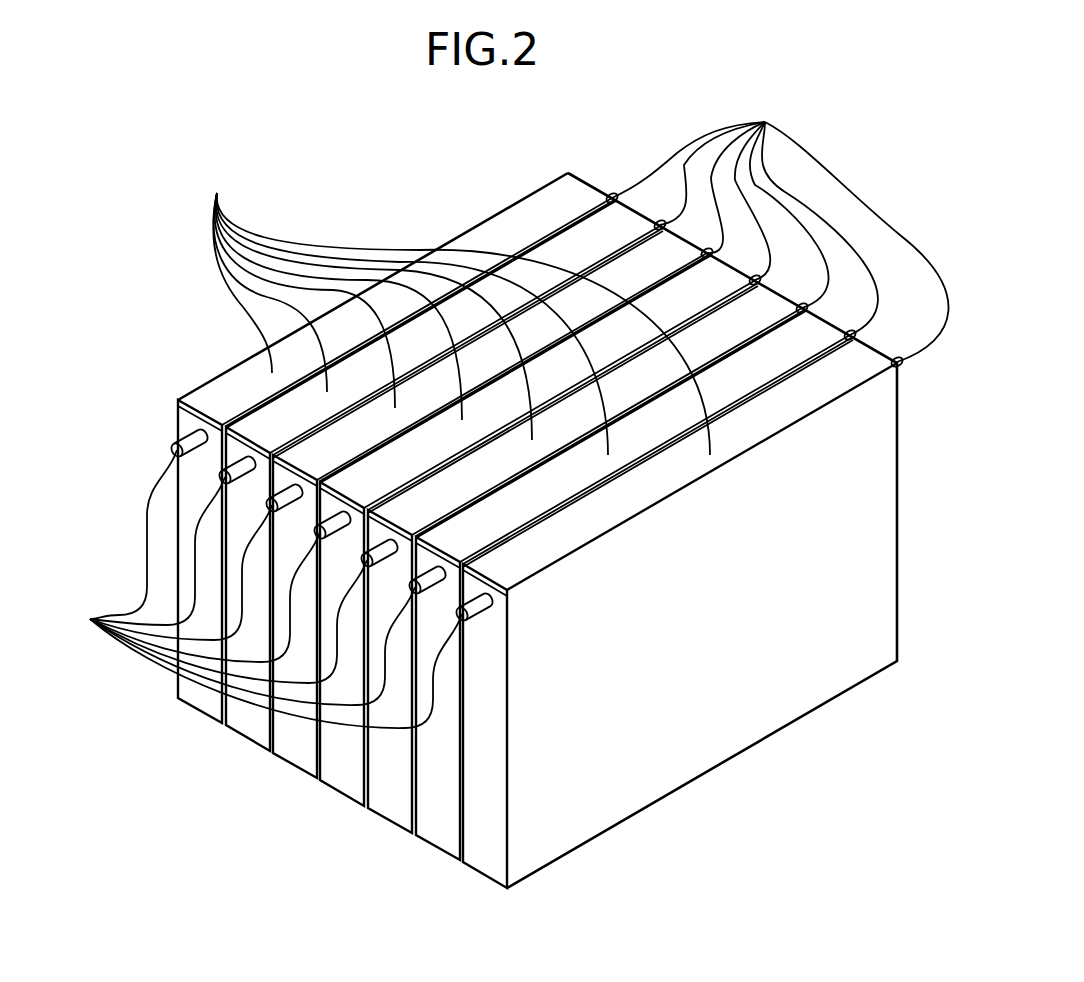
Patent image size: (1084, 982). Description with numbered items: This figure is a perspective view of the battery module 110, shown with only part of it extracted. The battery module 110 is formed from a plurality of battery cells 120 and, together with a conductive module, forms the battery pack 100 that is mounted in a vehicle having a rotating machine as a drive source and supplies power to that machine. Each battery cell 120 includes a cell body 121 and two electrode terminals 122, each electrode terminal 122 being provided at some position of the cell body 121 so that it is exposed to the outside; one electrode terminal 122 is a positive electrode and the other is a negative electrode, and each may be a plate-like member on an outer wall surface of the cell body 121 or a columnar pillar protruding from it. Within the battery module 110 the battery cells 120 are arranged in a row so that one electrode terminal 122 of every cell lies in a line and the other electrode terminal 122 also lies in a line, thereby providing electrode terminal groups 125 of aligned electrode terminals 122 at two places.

The battery pack 100 is at (495, 537).
The battery module 110 is at (334, 179).
The battery cell 120 is at (198, 723).
The cell body 121 is at (454, 312).
The electrode terminal 122 is at (495, 420).
The electrode terminal group 125 is at (546, 167).